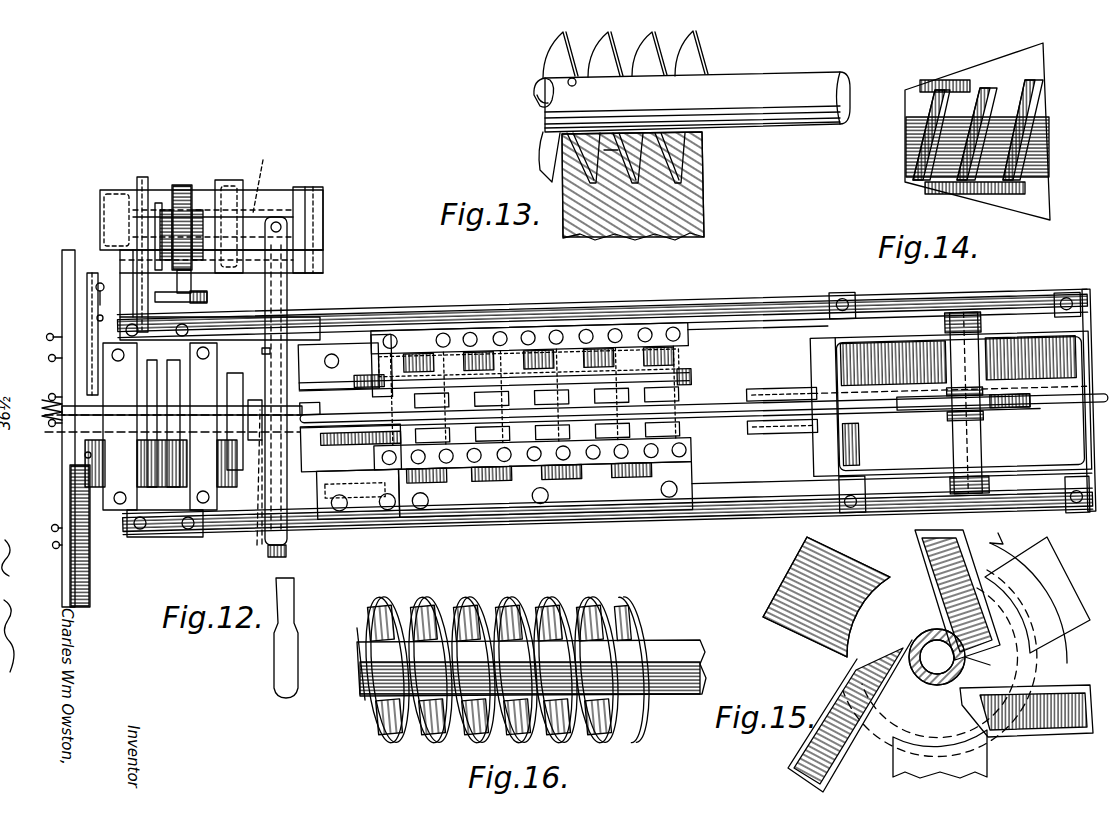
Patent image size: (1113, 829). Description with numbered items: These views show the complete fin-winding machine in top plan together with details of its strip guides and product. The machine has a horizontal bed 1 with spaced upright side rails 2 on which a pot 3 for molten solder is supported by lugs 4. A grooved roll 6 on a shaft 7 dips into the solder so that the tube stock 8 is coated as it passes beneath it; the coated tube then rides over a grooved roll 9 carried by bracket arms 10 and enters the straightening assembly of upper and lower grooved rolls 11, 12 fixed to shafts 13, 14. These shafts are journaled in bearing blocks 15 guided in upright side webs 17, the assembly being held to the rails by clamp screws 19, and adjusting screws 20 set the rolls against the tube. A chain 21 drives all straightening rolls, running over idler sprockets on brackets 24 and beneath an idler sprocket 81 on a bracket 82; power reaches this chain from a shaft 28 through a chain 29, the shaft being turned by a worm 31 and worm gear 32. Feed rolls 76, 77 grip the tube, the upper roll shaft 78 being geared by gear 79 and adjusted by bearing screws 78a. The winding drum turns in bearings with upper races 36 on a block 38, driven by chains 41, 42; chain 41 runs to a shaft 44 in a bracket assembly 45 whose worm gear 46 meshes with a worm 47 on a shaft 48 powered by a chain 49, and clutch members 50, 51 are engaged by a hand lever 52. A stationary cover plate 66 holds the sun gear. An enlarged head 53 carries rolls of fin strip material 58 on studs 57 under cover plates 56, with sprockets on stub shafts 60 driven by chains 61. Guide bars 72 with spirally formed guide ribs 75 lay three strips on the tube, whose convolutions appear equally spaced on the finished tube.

In FIG. 12, the horizontal bed 1 is at (664, 522).
In FIG. 12, the upright side rails 2 is at (745, 305).
In FIG. 12, the pot 3 is at (893, 344).
In FIG. 12, the lugs 4 is at (850, 306).
In FIG. 12, the grooved roll 6 is at (1002, 414).
In FIG. 12, the shaft 7 is at (955, 455).
In FIG. 12, the tube stock 8 is at (1055, 415).
In FIG. 13, the tube stock 8 is at (774, 77).
In FIG. 15, the tube stock 8 is at (922, 686).
In FIG. 16, the tube stock 8 is at (664, 640).
In FIG. 12, the grooved roll 9 is at (745, 422).
In FIG. 12, the bracket arms 10 is at (782, 394).
In FIG. 12, the upper grooved rolls 11 is at (494, 436).
In FIG. 12, the lower grooved rolls 12 is at (577, 433).
In FIG. 12, the shafts 13 is at (551, 397).
In FIG. 12, the shafts 14 is at (702, 392).
In FIG. 12, the bearing blocks 15 is at (408, 327).
In FIG. 12, the upright side webs 17 is at (556, 327).
In FIG. 12, the clamp screws 19 is at (420, 505).
In FIG. 12, the adjusting screws 20 is at (477, 332).
In FIG. 12, the chain 21 is at (690, 377).
In FIG. 12, the brackets 24 is at (383, 329).
In FIG. 12, the shaft 28 is at (374, 482).
In FIG. 12, the chain 29 is at (334, 460).
In FIG. 12, the worm 31 is at (370, 443).
In FIG. 12, the worm gear 32 is at (350, 448).
In FIG. 12, the upper races 36 is at (172, 426).
In FIG. 12, the block 38 is at (165, 522).
In FIG. 12, the driving chain 41 is at (138, 178).
In FIG. 12, the driving chain 42 is at (175, 390).
In FIG. 12, the shaft 44 is at (259, 182).
In FIG. 12, the bracket assembly 45 is at (312, 190).
In FIG. 12, the worm gear 46 is at (188, 189).
In FIG. 12, the worm 47 is at (159, 203).
In FIG. 12, the shaft 48 is at (197, 282).
In FIG. 12, the driving chain 49 is at (207, 297).
In FIG. 12, the clutch member 50 is at (227, 178).
In FIG. 12, the clutch member 51 is at (235, 181).
In FIG. 12, the hand lever 52 is at (290, 297).
In FIG. 12, the enlarged head 53 is at (62, 265).
In FIG. 12, the cover plates 56 is at (62, 302).
In FIG. 12, the studs 57 is at (46, 344).
In FIG. 12, the fin strip material 58 is at (52, 430).
In FIG. 13, the fin strip material 58 is at (704, 46).
In FIG. 15, the fin strip material 58 is at (914, 560).
In FIG. 16, the fin strip material 58 is at (450, 595).
In FIG. 12, the stub shaft 60 is at (100, 283).
In FIG. 12, the chains 61 is at (52, 485).
In FIG. 12, the stationary cover plate 66 is at (235, 421).
In FIG. 13, the guide bars 72 is at (704, 204).
In FIG. 14, the guide bars 72 is at (975, 76).
In FIG. 15, the guide bars 72 is at (795, 645).
In FIG. 13, the spirally formed guide ribs 75 is at (650, 145).
In FIG. 14, the spirally formed guide ribs 75 is at (940, 140).
In FIG. 15, the spirally formed guide ribs 75 is at (998, 668).
In FIG. 12, the upper fluted roll 76 is at (254, 398).
In FIG. 12, the lower fluted roll 77 is at (246, 505).
In FIG. 12, the shaft 78 is at (255, 530).
In FIG. 12, the bearing screws 78a is at (262, 351).
In FIG. 12, the gear 79 is at (310, 412).
In FIG. 12, the idler sprocket 81 is at (362, 368).
In FIG. 12, the bracket 82 is at (323, 346).